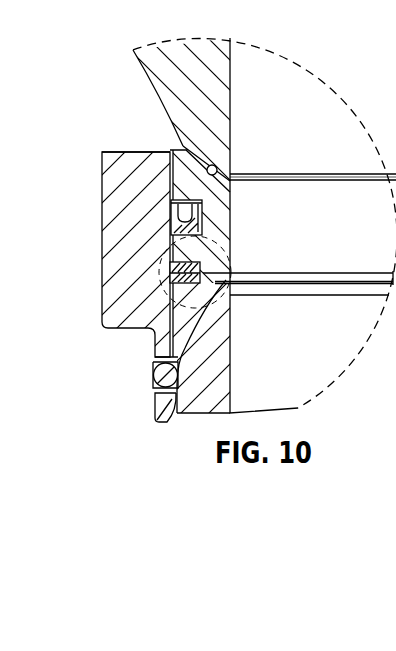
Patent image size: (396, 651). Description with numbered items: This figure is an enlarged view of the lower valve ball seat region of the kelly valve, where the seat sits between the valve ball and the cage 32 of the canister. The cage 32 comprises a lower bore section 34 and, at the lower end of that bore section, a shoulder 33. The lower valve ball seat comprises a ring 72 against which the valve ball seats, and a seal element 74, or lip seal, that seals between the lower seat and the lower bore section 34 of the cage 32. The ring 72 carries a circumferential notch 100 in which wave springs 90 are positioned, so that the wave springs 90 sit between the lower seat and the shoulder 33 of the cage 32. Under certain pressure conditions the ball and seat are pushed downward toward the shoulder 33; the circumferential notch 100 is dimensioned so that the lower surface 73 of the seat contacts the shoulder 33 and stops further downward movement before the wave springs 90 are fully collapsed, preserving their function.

The cage 32 is at (118, 212).
The lower bore section 34 is at (168, 157).
The ring 72 is at (170, 150).
The lower surface 73 is at (226, 280).
The seal element 74 is at (172, 218).
The wave springs 90 is at (170, 225).
The circumferential notch 100 is at (155, 337).
The shoulder 33 is at (168, 420).